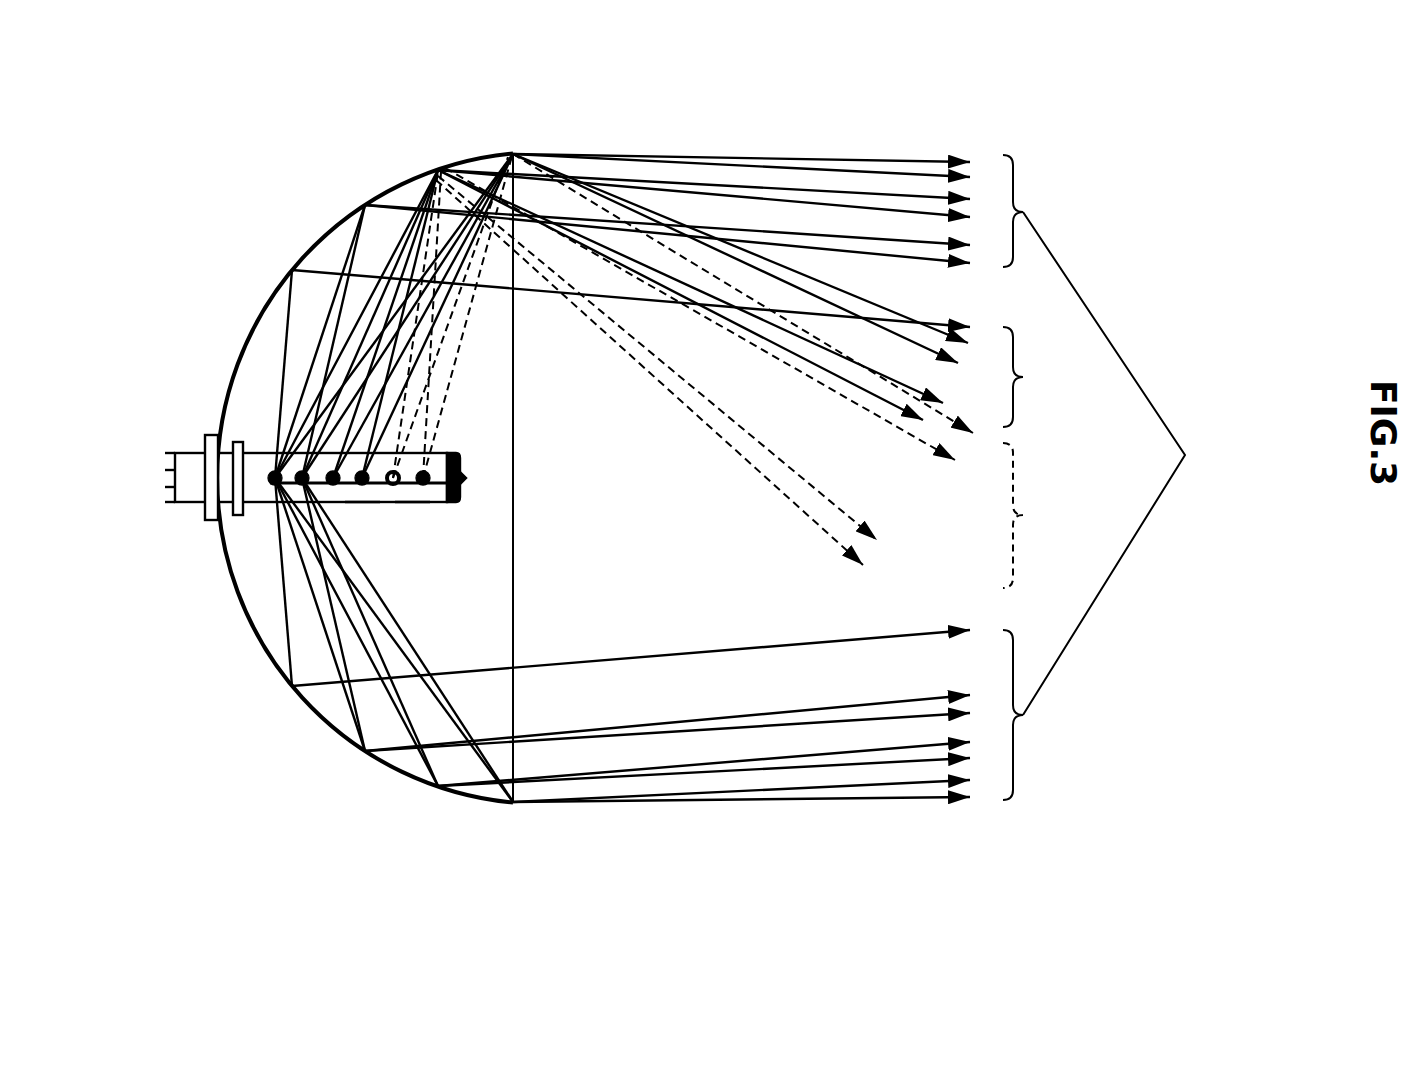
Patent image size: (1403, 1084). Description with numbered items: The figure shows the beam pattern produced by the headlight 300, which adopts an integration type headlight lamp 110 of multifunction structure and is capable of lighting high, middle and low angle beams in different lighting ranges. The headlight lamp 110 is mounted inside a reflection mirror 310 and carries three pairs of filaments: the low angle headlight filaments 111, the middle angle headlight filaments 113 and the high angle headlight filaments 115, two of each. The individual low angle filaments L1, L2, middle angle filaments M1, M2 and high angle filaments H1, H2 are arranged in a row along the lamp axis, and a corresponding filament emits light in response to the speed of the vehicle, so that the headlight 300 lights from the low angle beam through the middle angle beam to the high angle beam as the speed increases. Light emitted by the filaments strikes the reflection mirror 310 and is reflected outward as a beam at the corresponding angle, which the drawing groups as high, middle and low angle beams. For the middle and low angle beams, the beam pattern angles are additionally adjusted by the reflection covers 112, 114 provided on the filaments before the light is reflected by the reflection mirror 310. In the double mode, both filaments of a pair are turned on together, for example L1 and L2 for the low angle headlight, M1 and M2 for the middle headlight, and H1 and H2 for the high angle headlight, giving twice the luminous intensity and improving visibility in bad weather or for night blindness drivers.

The headlight 300 is at (686, 881).
The reflection mirror 310 is at (277, 670).
The headlight lamp 110 is at (470, 438).
The low angle headlight filament 111 is at (497, 497).
The reflection cover 112 is at (410, 487).
The middle angle headlight filament 113 is at (409, 562).
The reflection cover 114 is at (363, 488).
The high angle headlight filament 115 is at (203, 530).
The high angle filament H1 is at (301, 485).
The high angle filament H2 is at (268, 481).
The middle angle filament M1 is at (365, 487).
The middle angle filament M2 is at (333, 487).
The low angle filament L1 is at (471, 511).
The low angle filament L2 is at (400, 472).